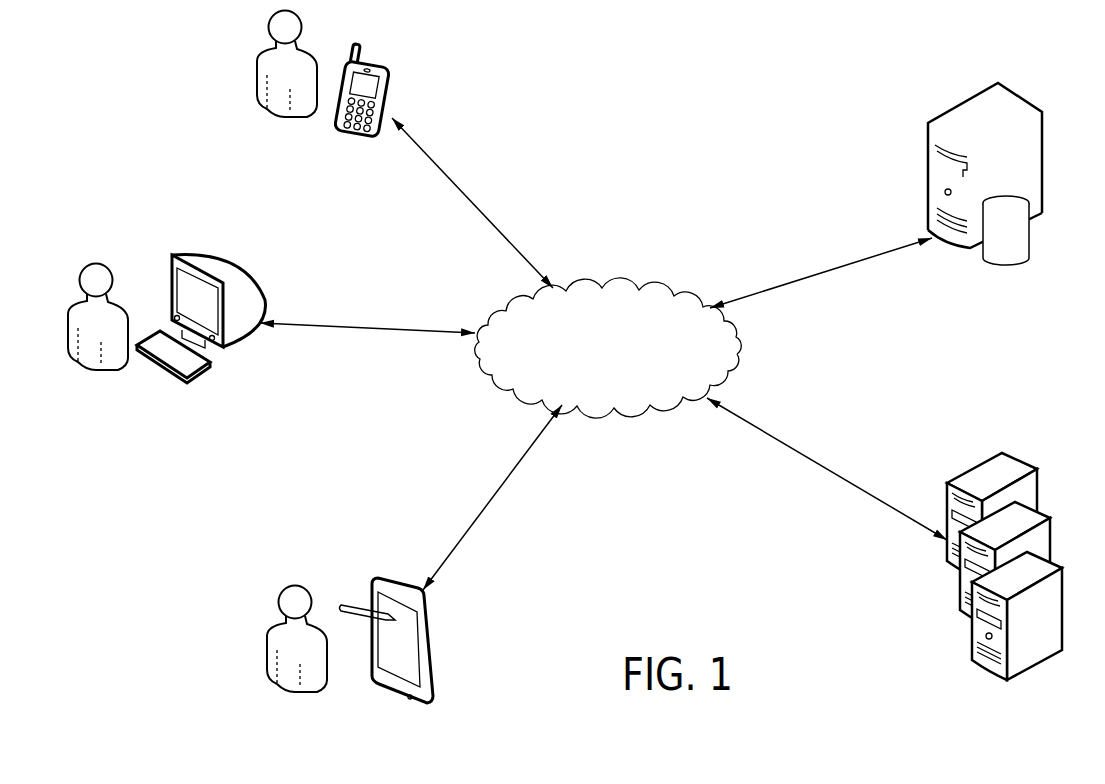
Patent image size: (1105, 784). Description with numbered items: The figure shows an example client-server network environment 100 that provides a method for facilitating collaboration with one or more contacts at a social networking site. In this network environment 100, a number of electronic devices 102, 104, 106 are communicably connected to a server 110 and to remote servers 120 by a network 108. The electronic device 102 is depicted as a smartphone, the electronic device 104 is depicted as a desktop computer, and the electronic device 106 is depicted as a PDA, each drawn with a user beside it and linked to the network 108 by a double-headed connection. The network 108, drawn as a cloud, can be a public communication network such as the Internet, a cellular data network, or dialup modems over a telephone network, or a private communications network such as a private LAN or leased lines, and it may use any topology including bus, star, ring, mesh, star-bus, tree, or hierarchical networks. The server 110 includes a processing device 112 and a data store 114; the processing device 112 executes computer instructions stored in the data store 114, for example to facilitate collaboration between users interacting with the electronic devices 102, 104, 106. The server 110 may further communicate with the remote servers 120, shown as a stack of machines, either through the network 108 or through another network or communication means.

The network environment 100 is at (742, 38).
The electronic device 102 is at (388, 77).
The electronic device 104 is at (224, 314).
The electronic device 106 is at (391, 614).
The network 108 is at (608, 336).
The server 110 is at (931, 268).
The processing device 112 is at (1014, 151).
The data store 114 is at (1043, 246).
The remote servers 120 is at (946, 647).